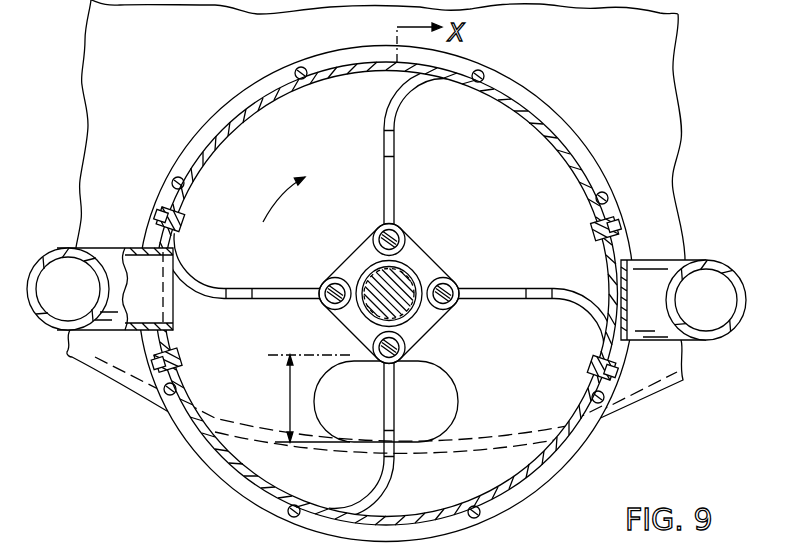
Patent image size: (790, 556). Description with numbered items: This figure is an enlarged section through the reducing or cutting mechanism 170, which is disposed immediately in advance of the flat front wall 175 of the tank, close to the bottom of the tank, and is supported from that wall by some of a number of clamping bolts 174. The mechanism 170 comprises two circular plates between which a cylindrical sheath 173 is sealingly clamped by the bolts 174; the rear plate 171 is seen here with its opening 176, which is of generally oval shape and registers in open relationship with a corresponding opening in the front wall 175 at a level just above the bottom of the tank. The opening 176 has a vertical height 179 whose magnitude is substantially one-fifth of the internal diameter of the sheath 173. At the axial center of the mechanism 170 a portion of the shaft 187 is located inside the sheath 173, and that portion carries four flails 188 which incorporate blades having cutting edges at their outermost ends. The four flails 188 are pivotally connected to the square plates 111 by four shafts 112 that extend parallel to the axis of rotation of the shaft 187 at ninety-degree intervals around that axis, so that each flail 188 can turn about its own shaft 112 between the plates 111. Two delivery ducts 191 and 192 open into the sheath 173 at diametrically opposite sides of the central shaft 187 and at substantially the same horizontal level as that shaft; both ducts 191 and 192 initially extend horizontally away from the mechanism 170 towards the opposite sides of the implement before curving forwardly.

The square plates 111 is at (343, 327).
The shafts 112 is at (322, 306).
The reducing or cutting mechanism 170 is at (225, 104).
The rear plate 171 is at (547, 116).
The cylindrical sheath 173 is at (221, 138).
The clamping bolts 174 is at (175, 181).
The front wall 175 is at (672, 178).
The opening 176 is at (453, 400).
The vertical height 179 is at (289, 388).
The shaft 187 is at (394, 284).
The flails 188 is at (397, 178).
The delivery duct 191 is at (100, 251).
The delivery duct 192 is at (663, 260).